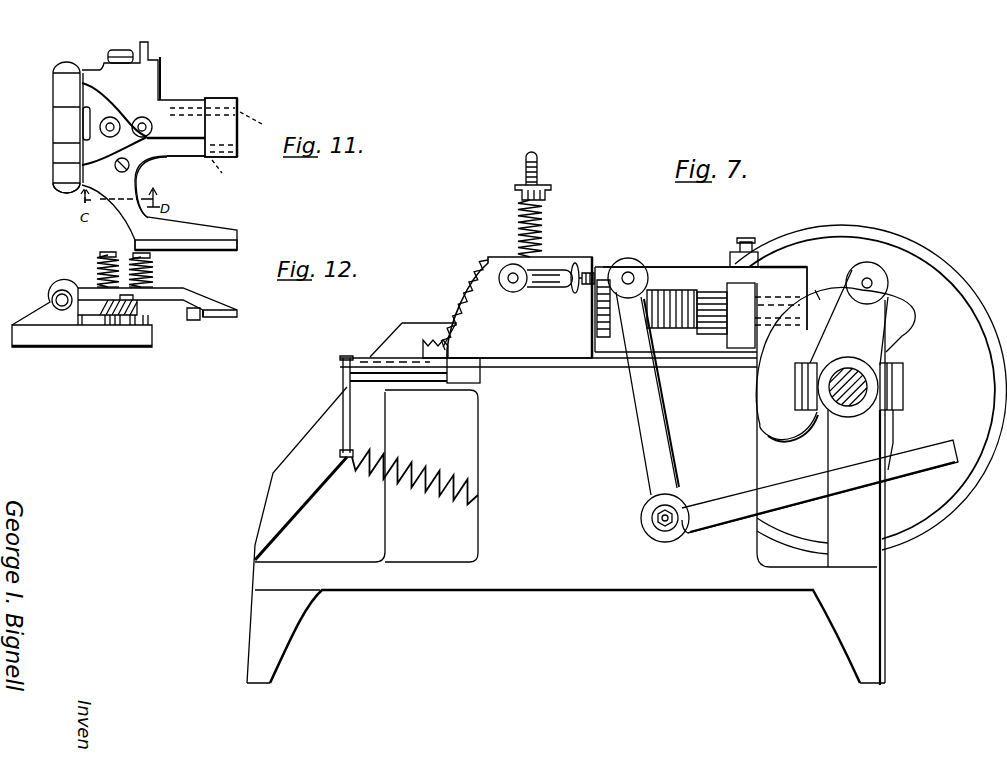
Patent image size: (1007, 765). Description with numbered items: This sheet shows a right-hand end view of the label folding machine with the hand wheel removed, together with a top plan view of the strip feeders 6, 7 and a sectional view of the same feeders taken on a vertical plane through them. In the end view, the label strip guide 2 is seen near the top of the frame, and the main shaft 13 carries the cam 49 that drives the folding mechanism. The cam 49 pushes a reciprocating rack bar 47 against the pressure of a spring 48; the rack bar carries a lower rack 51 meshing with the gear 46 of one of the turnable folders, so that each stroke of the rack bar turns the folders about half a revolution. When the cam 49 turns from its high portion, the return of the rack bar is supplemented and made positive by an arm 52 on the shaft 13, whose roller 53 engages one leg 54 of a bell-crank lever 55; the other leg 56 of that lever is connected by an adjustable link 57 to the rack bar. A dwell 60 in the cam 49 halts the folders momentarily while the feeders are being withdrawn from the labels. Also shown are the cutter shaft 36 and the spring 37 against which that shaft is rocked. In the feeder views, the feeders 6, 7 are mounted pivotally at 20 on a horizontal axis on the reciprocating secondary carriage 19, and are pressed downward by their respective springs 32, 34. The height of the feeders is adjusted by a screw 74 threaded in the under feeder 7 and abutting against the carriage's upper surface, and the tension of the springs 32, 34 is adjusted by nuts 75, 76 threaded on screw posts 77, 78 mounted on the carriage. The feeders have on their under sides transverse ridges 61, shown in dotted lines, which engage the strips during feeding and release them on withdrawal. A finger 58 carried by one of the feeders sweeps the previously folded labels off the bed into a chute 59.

In FIG. 7, the guide 2 is at (701, 309).
In FIG. 11, the strip feeder 6 is at (221, 127).
In FIG. 12, the strip feeder 6 is at (186, 299).
In FIG. 11, the strip feeder 7 is at (178, 148).
In FIG. 12, the strip feeder 7 is at (197, 310).
In FIG. 7, the shaft 13 is at (851, 402).
In FIG. 11, the secondary carriage 19 is at (71, 127).
In FIG. 12, the secondary carriage 19 is at (72, 341).
In FIG. 11, the pivot 20 is at (68, 193).
In FIG. 12, the pivot 20 is at (68, 282).
In FIG. 12, the spring 32 is at (158, 280).
In FIG. 7, the spring 32 is at (546, 236).
In FIG. 12, the spring 34 is at (97, 262).
In FIG. 7, the shaft 36 is at (697, 292).
In FIG. 7, the spring 37 is at (659, 291).
In FIG. 7, the gear 46 is at (468, 290).
In FIG. 7, the reciprocating bar 47 is at (465, 400).
In FIG. 7, the spring 48 is at (426, 465).
In FIG. 7, the cam 49 is at (835, 364).
In FIG. 7, the rack 51 is at (412, 352).
In FIG. 7, the arm 52 is at (849, 317).
In FIG. 7, the roller 53 is at (889, 282).
In FIG. 7, the leg 54 is at (820, 486).
In FIG. 7, the bell-crank lever 55 is at (706, 483).
In FIG. 7, the leg 56 is at (672, 400).
In FIG. 7, the adjustable link 57 is at (556, 286).
In FIG. 11, the finger 58 is at (222, 251).
In FIG. 7, the chute 59 is at (304, 458).
In FIG. 7, the dwell 60 is at (826, 299).
In FIG. 11, the ridges 61 is at (250, 185).
In FIG. 11, the screw 74 is at (121, 172).
In FIG. 12, the screw 74 is at (127, 327).
In FIG. 11, the nut 75 is at (113, 117).
In FIG. 11, the nut 76 is at (145, 117).
In FIG. 7, the nut 76 is at (548, 190).
In FIG. 12, the screw post 77 is at (107, 252).
In FIG. 12, the screw post 78 is at (152, 257).
In FIG. 7, the screw post 78 is at (539, 163).